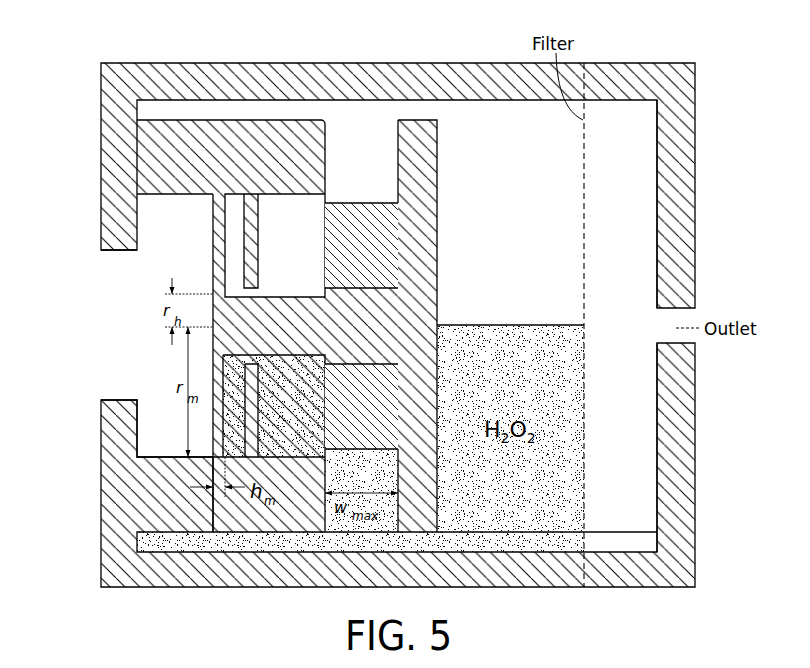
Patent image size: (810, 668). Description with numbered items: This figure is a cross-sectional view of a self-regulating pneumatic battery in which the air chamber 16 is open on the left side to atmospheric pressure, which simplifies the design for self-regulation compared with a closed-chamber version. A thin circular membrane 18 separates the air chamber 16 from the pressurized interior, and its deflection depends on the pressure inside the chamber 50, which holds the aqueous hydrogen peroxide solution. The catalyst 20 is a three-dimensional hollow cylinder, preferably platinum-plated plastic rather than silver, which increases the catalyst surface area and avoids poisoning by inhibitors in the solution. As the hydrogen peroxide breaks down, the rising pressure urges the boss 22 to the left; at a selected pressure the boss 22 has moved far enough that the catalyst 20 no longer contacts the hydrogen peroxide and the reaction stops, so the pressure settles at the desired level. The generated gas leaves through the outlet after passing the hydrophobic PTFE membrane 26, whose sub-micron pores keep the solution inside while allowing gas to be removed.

The chamber 50 is at (55, 62).
The air chamber 16 is at (150, 366).
The membrane 18 is at (213, 240).
The catalyst 20 is at (362, 203).
The boss 22 is at (437, 212).
The PTFE membrane 26 is at (620, 325).